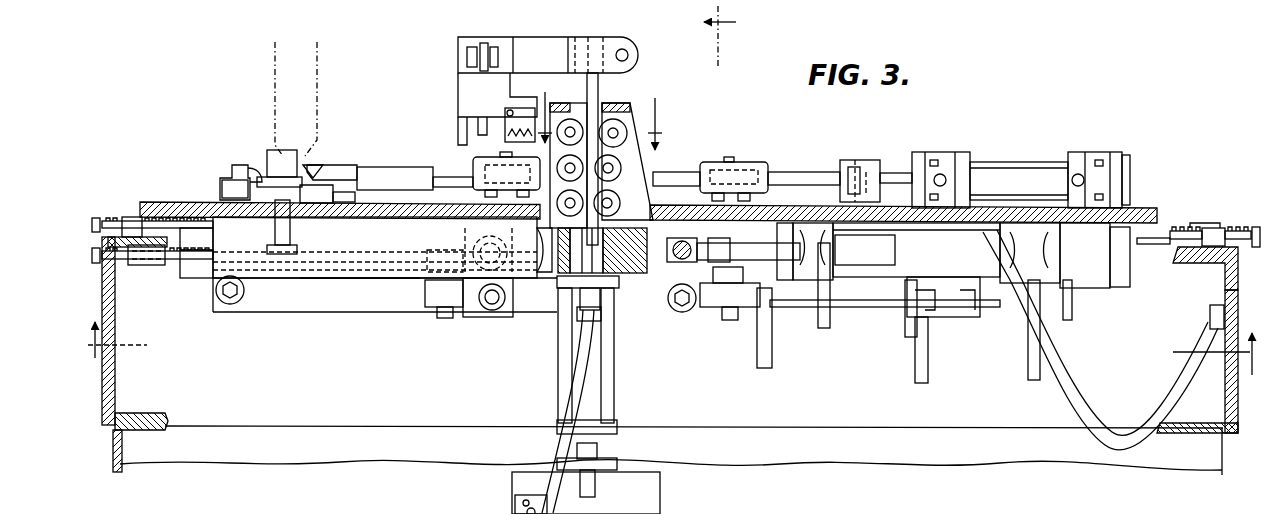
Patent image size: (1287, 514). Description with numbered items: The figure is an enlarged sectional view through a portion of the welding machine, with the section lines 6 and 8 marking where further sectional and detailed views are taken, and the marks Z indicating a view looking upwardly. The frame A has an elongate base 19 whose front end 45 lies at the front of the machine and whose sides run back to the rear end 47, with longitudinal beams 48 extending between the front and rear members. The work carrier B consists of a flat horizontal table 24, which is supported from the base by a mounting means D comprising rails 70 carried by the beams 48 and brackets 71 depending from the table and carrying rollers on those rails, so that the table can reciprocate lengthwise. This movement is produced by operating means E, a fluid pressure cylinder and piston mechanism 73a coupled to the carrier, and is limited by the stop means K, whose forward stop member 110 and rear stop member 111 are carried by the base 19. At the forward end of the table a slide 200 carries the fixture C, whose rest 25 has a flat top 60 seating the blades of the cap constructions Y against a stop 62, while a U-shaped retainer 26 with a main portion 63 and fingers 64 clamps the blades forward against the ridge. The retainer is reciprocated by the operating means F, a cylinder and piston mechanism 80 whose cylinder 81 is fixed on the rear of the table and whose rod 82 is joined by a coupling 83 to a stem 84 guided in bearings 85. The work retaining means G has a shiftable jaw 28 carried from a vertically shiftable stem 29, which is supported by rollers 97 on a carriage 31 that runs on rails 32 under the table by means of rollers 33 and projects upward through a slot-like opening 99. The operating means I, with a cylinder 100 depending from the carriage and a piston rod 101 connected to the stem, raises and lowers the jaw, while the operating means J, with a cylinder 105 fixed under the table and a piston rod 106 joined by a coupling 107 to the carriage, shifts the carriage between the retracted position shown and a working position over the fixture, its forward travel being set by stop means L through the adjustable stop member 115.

The section line 6— 6 is at (715, 35).
The section line 8— 8 is at (597, 115).
The section line Z is at (670, 359).
The table 24 is at (812, 212).
The front end 45 is at (118, 400).
The base 19 is at (107, 432).
The longitudinal beams 48 is at (880, 425).
The frame A is at (445, 438).
The rear end 47 is at (1222, 406).
The stop member 111 is at (1180, 230).
The forward stop member 110 is at (160, 218).
The stop means K is at (98, 216).
The work carrier B is at (172, 200).
The stop means L is at (176, 264).
The rails 70 is at (200, 280).
The stop member 115 is at (194, 247).
The mounting means D is at (272, 295).
The brackets 71 is at (303, 310).
The rails 32 is at (315, 278).
The rollers 33 is at (430, 290).
The cap constructions Y is at (272, 148).
The rest 25 is at (230, 163).
The fixture C is at (226, 174).
The stop 62 is at (240, 165).
The fingers 64 is at (320, 165).
The main portion 63 is at (370, 185).
The retainer 26 is at (360, 172).
The flat top 60 is at (300, 205).
The slide 200 is at (352, 203).
The work retaining means G is at (452, 90).
The jaw 28 is at (453, 112).
The stem 29 is at (605, 84).
The carriage 31 is at (640, 160).
The rollers 97 is at (618, 203).
The slot-like opening 99 is at (657, 207).
The piston rod 101 is at (630, 275).
The cylinder 100 is at (612, 368).
The operating means I is at (598, 406).
The coupling 107 is at (668, 258).
The piston rod 106 is at (744, 245).
The operating means E is at (846, 302).
The cylinder and piston mechanism 73a is at (795, 308).
The cylinder 105 is at (981, 303).
The operating means J is at (878, 255).
The bearings 85 is at (718, 167).
The stem 84 is at (800, 172).
The coupling 83 is at (856, 160).
The rod 82 is at (890, 172).
The operating means F is at (987, 153).
The cylinder and piston mechanism 80 is at (1042, 172).
The cylinder 81 is at (1019, 181).